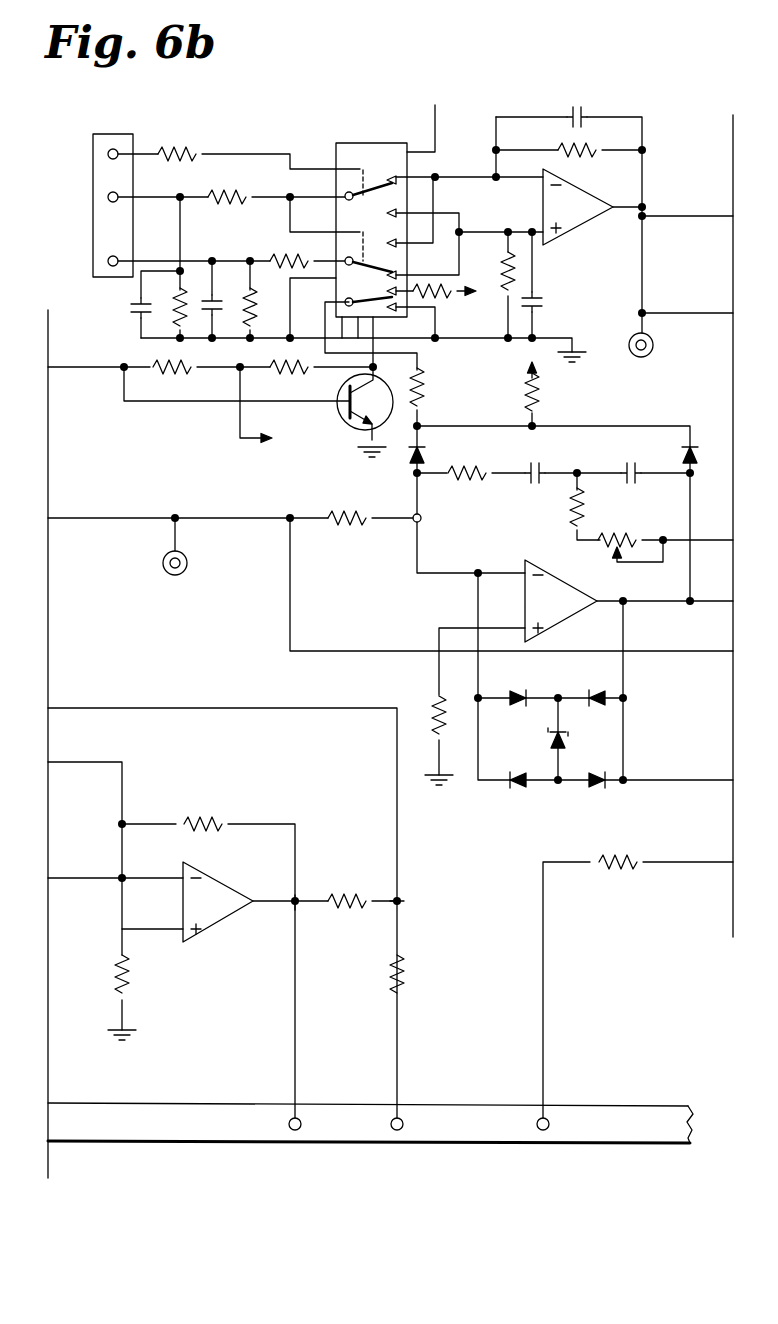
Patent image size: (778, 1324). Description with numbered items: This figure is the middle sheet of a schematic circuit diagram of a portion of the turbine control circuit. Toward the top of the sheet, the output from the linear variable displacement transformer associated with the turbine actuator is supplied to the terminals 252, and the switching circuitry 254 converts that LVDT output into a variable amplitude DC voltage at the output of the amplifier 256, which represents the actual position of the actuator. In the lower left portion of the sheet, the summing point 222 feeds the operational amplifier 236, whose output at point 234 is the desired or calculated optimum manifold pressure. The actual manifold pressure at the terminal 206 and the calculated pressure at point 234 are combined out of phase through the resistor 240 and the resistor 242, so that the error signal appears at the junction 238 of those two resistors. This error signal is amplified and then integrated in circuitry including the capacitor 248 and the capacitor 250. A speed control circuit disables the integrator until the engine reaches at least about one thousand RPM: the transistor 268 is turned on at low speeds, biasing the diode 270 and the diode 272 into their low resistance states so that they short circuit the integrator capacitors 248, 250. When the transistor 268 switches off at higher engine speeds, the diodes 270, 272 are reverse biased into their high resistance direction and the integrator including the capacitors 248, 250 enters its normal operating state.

The terminal 206 is at (420, 1137).
The summing point 222 is at (120, 842).
The point 234 is at (300, 906).
The operational amplifier 236 is at (222, 915).
The junction 238 is at (401, 905).
The resistor 240 is at (405, 982).
The resistor 242 is at (346, 890).
The capacitor 248 is at (536, 484).
The capacitor 250 is at (632, 463).
The terminals 252 is at (110, 257).
The switching circuitry 254 is at (358, 150).
The amplifier 256 is at (580, 218).
The transistor 268 is at (346, 428).
The diode 270 is at (428, 453).
The diode 272 is at (686, 455).